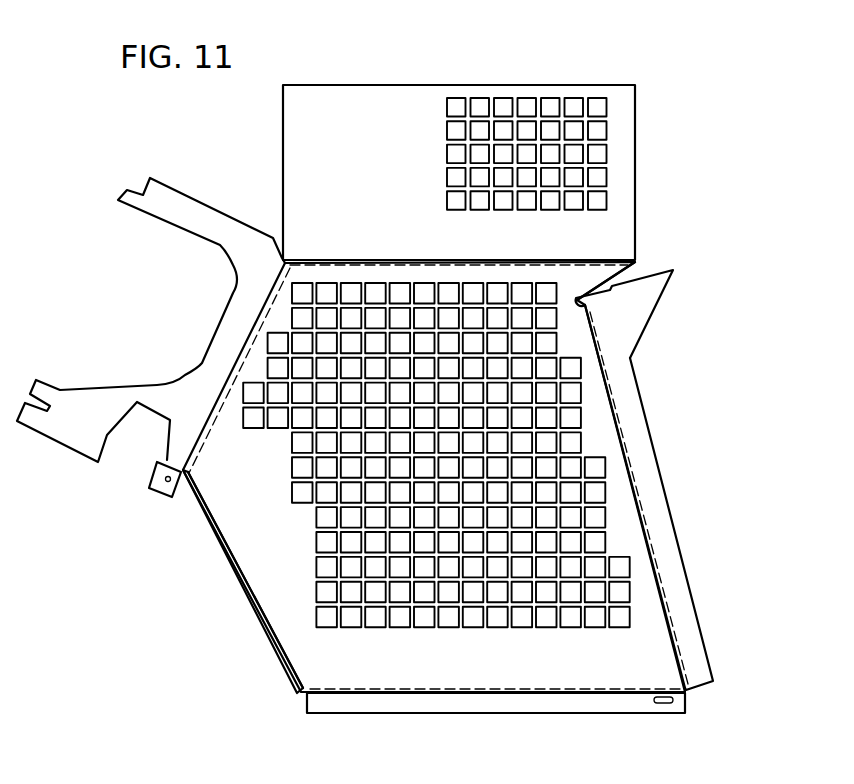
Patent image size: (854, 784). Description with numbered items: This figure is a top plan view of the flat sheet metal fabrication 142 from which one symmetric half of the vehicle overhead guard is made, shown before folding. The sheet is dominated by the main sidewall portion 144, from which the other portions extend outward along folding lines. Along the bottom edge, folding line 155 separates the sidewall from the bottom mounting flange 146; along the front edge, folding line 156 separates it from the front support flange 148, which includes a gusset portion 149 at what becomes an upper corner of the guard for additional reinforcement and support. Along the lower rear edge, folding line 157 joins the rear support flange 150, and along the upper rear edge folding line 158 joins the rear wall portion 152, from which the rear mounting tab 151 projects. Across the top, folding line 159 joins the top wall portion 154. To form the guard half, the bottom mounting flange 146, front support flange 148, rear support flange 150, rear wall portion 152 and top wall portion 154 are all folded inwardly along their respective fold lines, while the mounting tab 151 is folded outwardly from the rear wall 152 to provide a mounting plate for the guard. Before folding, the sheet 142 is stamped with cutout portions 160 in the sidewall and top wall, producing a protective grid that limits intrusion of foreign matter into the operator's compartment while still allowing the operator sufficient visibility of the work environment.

The sheet metal fabrication 142 is at (657, 448).
The main sidewall portion 144 is at (500, 668).
The bottom mounting flange 146 is at (302, 698).
The front support flange 148 is at (670, 538).
The gusset portion 149 is at (653, 297).
The rear support flange 150 is at (218, 560).
The rear mounting tab 151 is at (162, 483).
The rear wall portion 152 is at (75, 430).
The top wall portion 154 is at (428, 103).
The folding line 155 is at (552, 690).
The folding line 156 is at (668, 620).
The folding line 157 is at (230, 547).
The folding line 158 is at (216, 402).
The folding line 159 is at (372, 262).
The cutout portions 160 is at (422, 613).